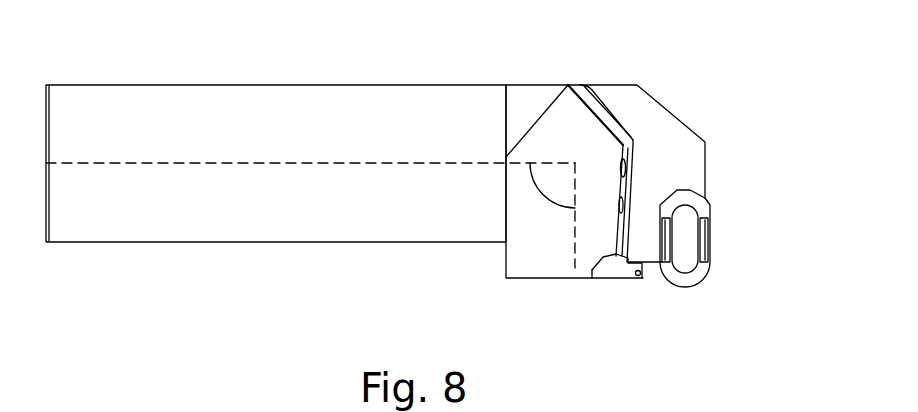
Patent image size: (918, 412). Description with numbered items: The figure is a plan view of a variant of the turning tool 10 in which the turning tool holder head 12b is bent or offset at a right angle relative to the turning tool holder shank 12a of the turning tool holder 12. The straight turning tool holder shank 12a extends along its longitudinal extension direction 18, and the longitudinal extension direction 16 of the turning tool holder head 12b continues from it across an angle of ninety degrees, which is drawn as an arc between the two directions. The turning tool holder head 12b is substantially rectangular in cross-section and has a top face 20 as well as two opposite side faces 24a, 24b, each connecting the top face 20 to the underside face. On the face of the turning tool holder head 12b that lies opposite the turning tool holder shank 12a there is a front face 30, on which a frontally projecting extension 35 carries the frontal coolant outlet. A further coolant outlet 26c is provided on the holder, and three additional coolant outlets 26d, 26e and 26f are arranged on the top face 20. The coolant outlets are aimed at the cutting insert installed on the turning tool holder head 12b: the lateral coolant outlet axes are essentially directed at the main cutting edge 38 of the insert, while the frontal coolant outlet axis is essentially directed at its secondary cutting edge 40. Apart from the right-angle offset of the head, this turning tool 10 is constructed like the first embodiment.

The turning tool 10 is at (213, 63).
The turning tool holder 12 is at (152, 222).
The turning tool holder shank 12a is at (125, 105).
The turning tool holder head 12b is at (570, 117).
The longitudinal extension direction 16 is at (572, 247).
The longitudinal extension direction 18 is at (314, 163).
The top face 20 is at (626, 399).
The side face 24a is at (721, 226).
The side face 24b is at (504, 261).
The coolant outlet 26c is at (638, 278).
The additional coolant outlet 26d is at (608, 264).
The additional coolant outlet 26e is at (632, 200).
The additional coolant outlet 26f is at (627, 160).
The front face 30 is at (522, 280).
The frontally projecting extension 35 is at (628, 280).
The main cutting edge 38 is at (726, 265).
The secondary cutting edge 40 is at (686, 292).